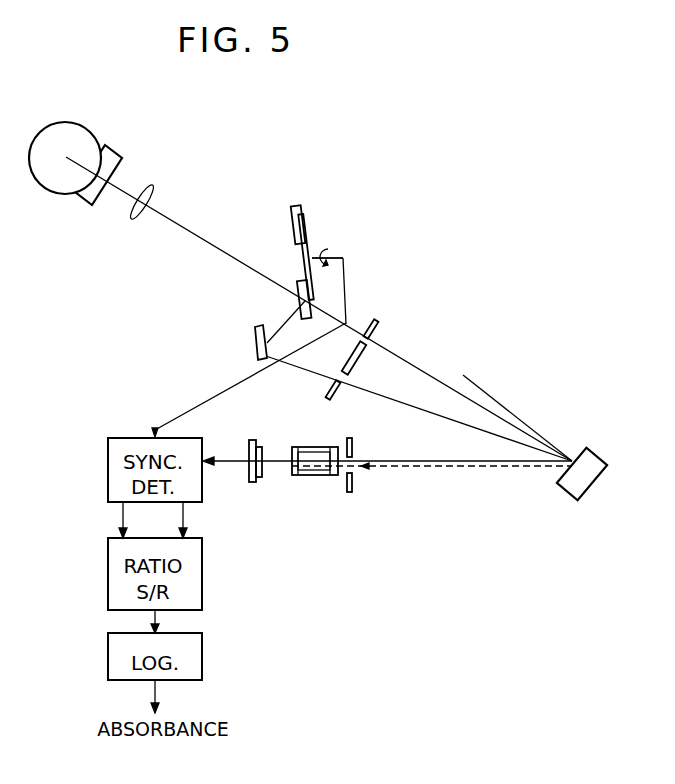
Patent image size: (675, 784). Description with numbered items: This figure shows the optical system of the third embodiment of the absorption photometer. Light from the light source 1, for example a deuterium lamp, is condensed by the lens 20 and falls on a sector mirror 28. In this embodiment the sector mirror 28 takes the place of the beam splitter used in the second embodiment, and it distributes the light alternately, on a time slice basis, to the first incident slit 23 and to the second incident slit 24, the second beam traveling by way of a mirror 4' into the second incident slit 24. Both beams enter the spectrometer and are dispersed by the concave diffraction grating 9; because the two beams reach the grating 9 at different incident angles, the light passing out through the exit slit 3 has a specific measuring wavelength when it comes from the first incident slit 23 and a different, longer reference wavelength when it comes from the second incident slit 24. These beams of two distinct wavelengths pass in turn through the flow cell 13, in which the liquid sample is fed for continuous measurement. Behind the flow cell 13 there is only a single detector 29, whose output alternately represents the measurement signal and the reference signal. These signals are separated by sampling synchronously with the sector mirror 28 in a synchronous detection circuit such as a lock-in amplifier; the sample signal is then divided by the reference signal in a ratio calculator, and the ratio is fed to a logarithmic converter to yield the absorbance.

The light source 1 is at (66, 192).
The lens 20 is at (134, 217).
The sector mirror 28 is at (292, 215).
The mirror 4' is at (242, 332).
The first incident slit 23 is at (378, 330).
The second incident slit 24 is at (325, 388).
The concave diffraction grating 9 is at (590, 487).
The exit slit 3 is at (353, 445).
The flow cell 13 is at (316, 477).
The detector 29 is at (249, 468).